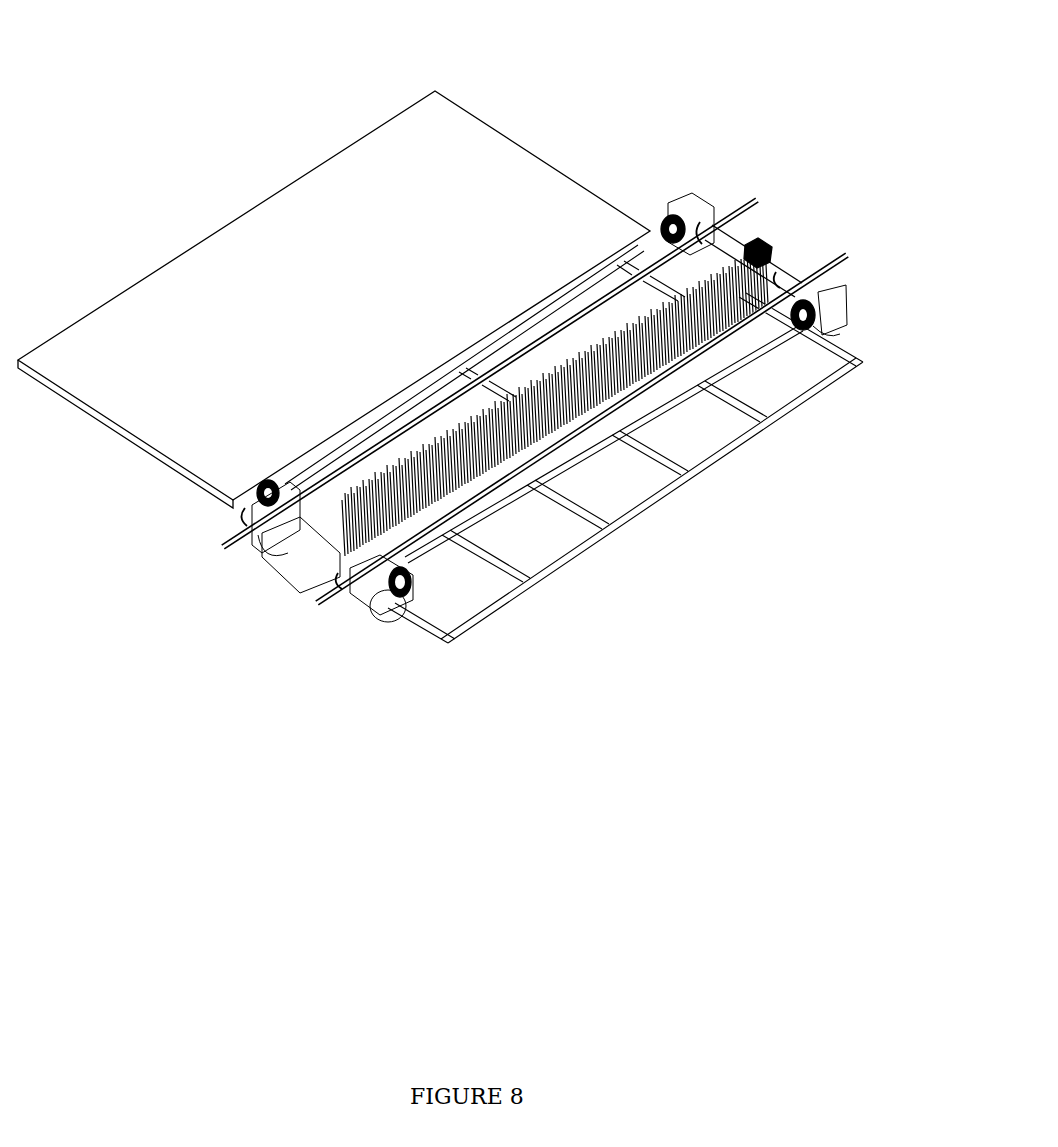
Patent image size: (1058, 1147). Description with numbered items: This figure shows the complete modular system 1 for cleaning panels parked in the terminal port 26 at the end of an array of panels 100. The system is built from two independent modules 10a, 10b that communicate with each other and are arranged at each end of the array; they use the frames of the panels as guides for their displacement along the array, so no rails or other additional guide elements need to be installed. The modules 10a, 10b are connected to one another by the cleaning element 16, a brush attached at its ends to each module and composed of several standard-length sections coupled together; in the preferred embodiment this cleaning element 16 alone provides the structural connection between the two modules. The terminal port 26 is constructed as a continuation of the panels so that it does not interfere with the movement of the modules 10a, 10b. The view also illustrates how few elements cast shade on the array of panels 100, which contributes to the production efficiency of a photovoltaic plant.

The modular system for cleaning panels 1 is at (719, 89).
The array of panels 100 is at (290, 220).
The first independent module 10a is at (827, 290).
The second independent module 10b is at (397, 597).
The cleaning element 16 is at (620, 373).
The terminal port 26 is at (603, 520).